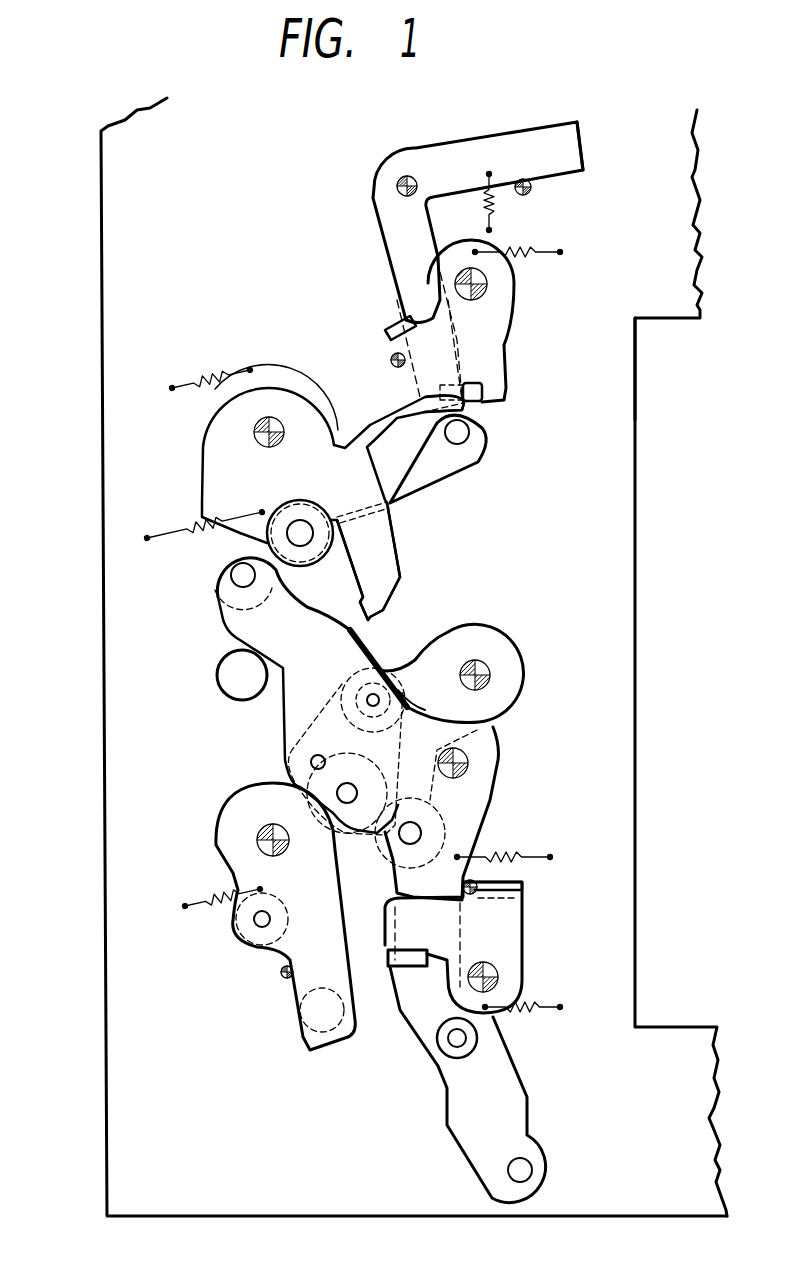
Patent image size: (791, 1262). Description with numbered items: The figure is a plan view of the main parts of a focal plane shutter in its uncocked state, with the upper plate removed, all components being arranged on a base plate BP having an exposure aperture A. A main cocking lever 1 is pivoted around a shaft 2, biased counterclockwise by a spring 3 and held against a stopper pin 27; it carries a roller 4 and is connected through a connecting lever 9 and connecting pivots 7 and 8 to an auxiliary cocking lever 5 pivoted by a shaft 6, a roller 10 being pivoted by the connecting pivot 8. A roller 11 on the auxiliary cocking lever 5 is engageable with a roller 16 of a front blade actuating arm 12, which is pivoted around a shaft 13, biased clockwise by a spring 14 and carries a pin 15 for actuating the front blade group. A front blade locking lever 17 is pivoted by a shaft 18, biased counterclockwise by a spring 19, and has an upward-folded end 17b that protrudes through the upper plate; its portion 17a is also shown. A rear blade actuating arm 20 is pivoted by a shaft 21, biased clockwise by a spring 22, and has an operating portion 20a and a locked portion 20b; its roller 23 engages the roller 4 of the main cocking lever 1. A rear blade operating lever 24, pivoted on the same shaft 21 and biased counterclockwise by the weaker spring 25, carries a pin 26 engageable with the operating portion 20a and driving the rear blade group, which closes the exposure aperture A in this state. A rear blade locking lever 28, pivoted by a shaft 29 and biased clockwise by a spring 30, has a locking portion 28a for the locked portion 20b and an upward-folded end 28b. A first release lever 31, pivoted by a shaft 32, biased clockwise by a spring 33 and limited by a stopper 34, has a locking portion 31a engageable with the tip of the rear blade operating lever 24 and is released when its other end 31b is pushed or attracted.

The main cocking lever 1 is at (528, 1095).
The shaft 2 is at (468, 762).
The spring 3 is at (550, 850).
The roller 4 is at (212, 588).
The auxiliary cocking lever 5 is at (510, 644).
The shaft 6 is at (490, 676).
The connecting pivot 7 is at (311, 761).
The connecting pivot 8 is at (376, 694).
The connecting lever 9 is at (305, 710).
The roller 10 is at (432, 700).
The roller 11 is at (478, 822).
The front blade actuating arm 12 is at (232, 804).
The shaft 13 is at (257, 838).
The spring 14 is at (186, 910).
The pin 15 is at (322, 1032).
The roller 16 is at (353, 835).
The front blade locking lever 17 is at (522, 934).
The tab 17a is at (518, 881).
The upward-folded end 17b is at (405, 968).
The shaft 18 is at (498, 977).
The spring 19 is at (560, 1010).
The rear blade actuating arm 20 is at (214, 466).
The operating portion 20a is at (425, 399).
The locked portion 20b is at (365, 607).
The shaft 21 is at (254, 431).
The spring 22 is at (148, 540).
The roller 23 is at (262, 509).
The rear blade operating lever 24 is at (208, 438).
The spring 25 is at (172, 386).
The pin 26 is at (470, 440).
The stopper pin 27 is at (232, 688).
The rear blade locking lever 28 is at (506, 310).
The locking portion 28a is at (482, 392).
The upward-folded end 28b is at (390, 328).
The shaft 29 is at (487, 282).
The spring 30 is at (560, 250).
The first release lever 31 is at (376, 220).
The locking portion 31a is at (463, 410).
The other end 31b is at (583, 124).
The shaft 32 is at (397, 183).
The spring 33 is at (489, 222).
The stopper 34 is at (531, 189).
The exposure aperture A is at (680, 322).
The base plate BP is at (106, 1144).